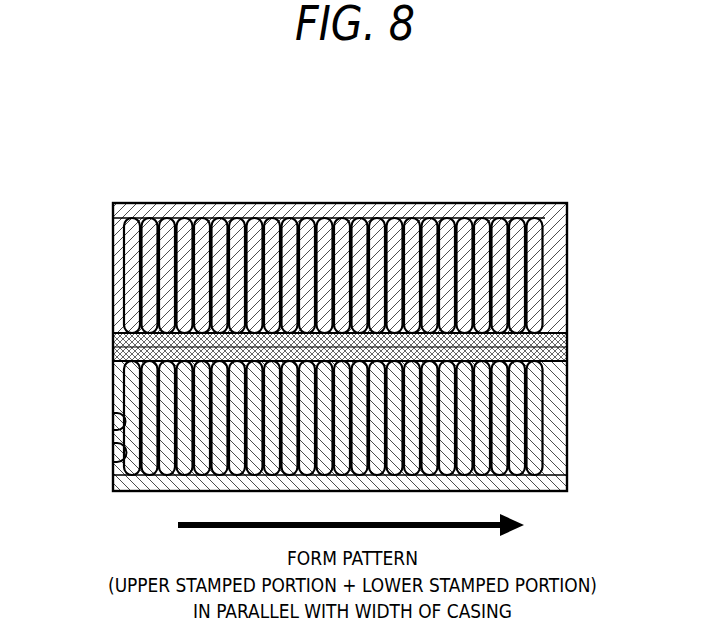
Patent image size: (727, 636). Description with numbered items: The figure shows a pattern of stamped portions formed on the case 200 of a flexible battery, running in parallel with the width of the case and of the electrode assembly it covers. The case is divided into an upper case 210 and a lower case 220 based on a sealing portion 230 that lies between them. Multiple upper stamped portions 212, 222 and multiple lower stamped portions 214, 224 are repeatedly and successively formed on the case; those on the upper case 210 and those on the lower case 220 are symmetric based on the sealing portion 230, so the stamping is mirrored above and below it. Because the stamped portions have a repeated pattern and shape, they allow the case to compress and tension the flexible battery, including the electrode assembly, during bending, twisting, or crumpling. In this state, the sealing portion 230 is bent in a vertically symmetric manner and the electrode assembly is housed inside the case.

The stamped battery casing / form pattern assembly 200 is at (518, 178).
The upper case 210 is at (118, 263).
The upper stamped portion 212 is at (517, 252).
The lower stamped portion 214 is at (533, 293).
The lower case 220 is at (115, 414).
The upper stamped portion 222 is at (500, 400).
The lower stamped portion 224 is at (517, 447).
The sealing portion 230 is at (118, 349).